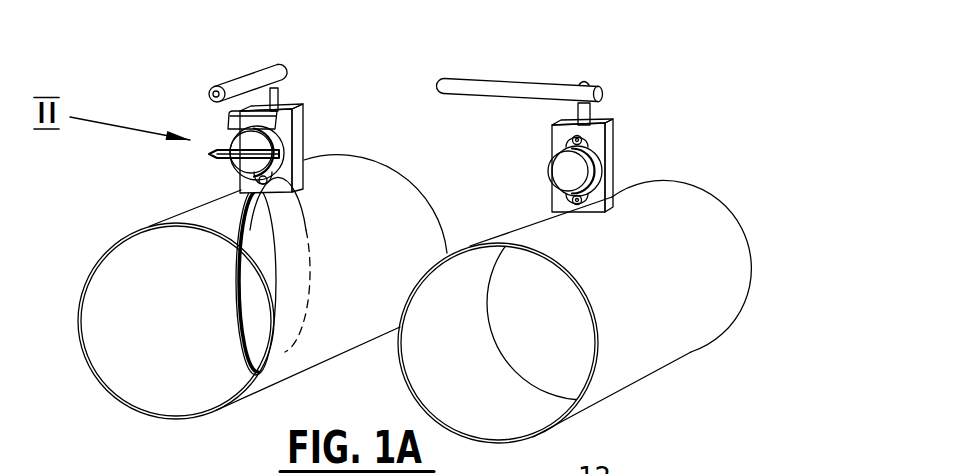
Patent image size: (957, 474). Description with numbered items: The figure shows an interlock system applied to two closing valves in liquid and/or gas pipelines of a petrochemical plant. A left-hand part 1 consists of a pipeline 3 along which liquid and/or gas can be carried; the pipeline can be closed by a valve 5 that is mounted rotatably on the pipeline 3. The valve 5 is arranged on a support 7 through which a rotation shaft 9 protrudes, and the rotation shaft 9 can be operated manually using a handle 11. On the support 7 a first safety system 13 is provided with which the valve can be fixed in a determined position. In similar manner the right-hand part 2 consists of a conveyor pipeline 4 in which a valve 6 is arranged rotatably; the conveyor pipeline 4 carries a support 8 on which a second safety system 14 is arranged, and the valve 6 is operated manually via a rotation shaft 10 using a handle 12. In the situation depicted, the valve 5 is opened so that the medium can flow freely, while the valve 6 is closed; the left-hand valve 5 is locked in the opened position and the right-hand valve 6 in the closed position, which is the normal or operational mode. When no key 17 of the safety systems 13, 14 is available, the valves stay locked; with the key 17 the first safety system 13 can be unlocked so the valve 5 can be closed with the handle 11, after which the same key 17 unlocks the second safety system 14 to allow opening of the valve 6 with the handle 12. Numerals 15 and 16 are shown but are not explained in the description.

The left-hand part 1 is at (387, 127).
The right-hand part 2 is at (733, 127).
The pipeline 3 is at (102, 353).
The conveyor pipeline 4 is at (705, 325).
The valve 5 is at (233, 311).
The valve 6 is at (518, 340).
The support 7 is at (303, 157).
The support 8 is at (607, 200).
The rotation shaft 9 is at (280, 88).
The rotation shaft 10 is at (590, 115).
The handle 11 is at (245, 80).
The handle 12 is at (503, 87).
The first safety system 13 is at (167, 163).
The second safety system 14 is at (527, 162).
The bearing ring 15 is at (588, 163).
The cap element 16 is at (303, 121).
The key 17 is at (240, 167).